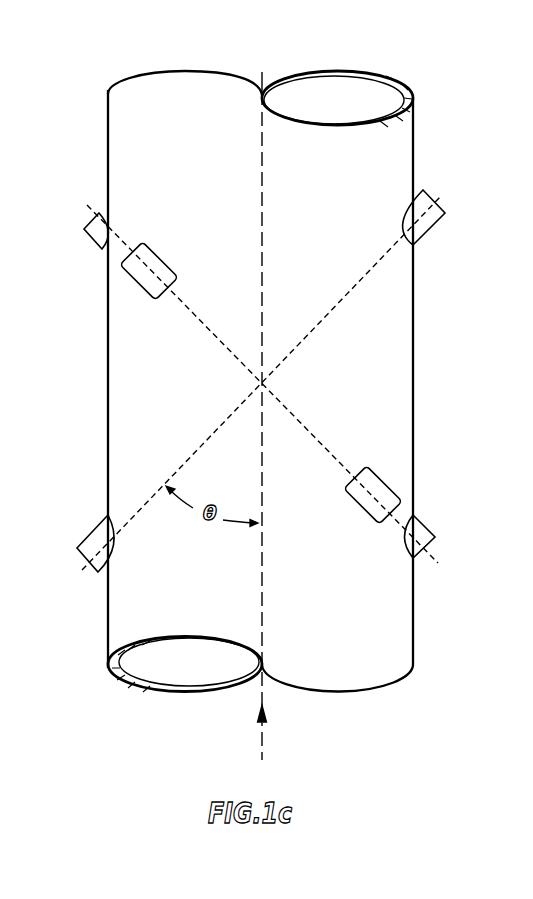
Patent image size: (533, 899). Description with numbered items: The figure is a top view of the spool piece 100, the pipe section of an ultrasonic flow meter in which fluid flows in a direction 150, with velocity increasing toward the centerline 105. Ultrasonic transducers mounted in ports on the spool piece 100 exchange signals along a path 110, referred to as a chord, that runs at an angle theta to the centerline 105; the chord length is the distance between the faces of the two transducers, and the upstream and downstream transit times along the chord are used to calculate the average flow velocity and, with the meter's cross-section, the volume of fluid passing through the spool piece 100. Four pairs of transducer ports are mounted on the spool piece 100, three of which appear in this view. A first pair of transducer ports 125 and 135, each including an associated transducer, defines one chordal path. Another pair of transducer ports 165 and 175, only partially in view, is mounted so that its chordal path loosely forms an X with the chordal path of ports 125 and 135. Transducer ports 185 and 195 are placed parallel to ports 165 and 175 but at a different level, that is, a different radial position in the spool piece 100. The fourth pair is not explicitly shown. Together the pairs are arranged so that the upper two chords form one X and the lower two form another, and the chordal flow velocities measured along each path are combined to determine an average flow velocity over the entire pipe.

The spool piece 100 is at (413, 113).
The centerline 105 is at (262, 160).
The path 110 is at (308, 335).
The transducer port 125 is at (435, 227).
The transducer port 135 is at (98, 523).
The direction 150 is at (262, 745).
The transducer port 165 is at (95, 240).
The transducer port 175 is at (425, 520).
The transducer port 185 is at (153, 243).
The transducer port 195 is at (358, 507).